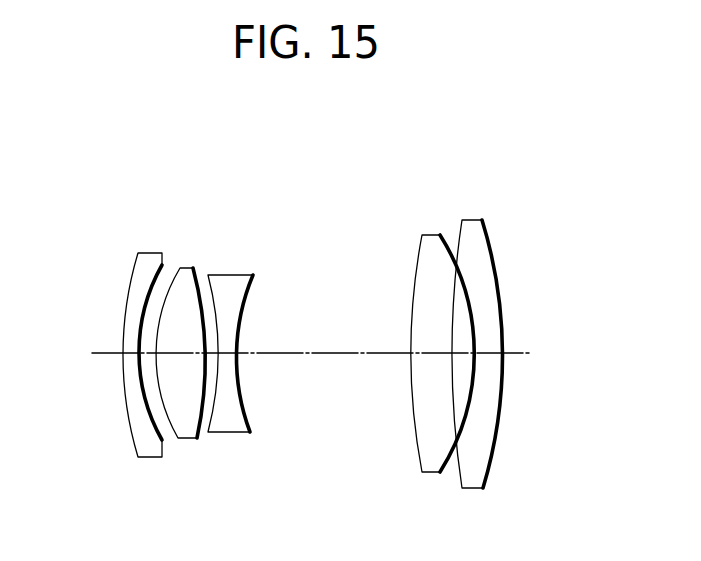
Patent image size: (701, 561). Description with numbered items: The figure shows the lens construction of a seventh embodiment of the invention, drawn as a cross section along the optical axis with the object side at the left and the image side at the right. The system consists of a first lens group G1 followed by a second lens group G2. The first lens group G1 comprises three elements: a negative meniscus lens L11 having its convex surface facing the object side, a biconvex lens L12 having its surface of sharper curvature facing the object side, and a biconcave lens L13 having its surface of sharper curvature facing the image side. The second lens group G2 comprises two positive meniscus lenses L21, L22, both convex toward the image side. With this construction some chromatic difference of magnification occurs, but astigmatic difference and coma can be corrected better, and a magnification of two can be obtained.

The first lens group G1 is at (258, 150).
The second lens group G2 is at (495, 153).
The negative meniscus lens L11 is at (150, 252).
The biconvex lens L12 is at (187, 267).
The biconcave lens L13 is at (235, 274).
The positive meniscus lens L21 is at (430, 234).
The positive meniscus lens L22 is at (468, 219).